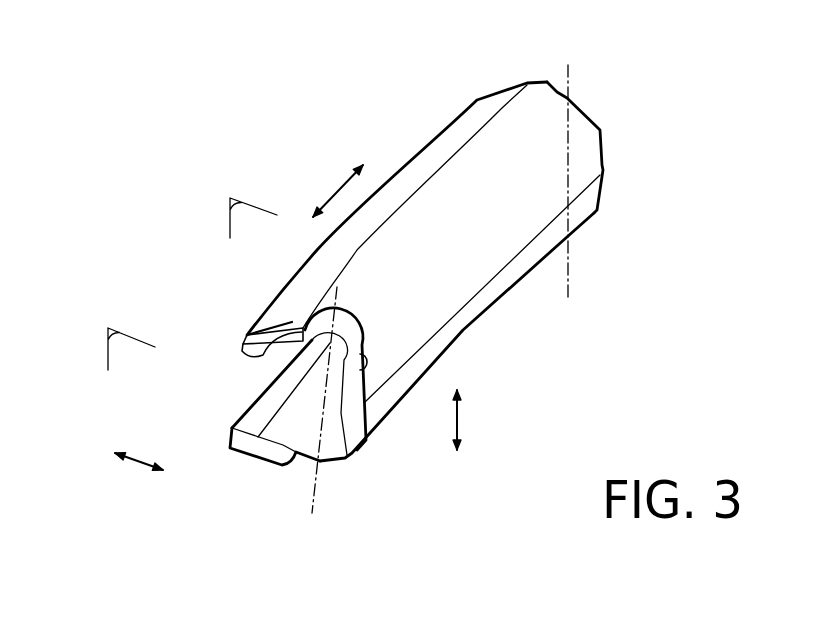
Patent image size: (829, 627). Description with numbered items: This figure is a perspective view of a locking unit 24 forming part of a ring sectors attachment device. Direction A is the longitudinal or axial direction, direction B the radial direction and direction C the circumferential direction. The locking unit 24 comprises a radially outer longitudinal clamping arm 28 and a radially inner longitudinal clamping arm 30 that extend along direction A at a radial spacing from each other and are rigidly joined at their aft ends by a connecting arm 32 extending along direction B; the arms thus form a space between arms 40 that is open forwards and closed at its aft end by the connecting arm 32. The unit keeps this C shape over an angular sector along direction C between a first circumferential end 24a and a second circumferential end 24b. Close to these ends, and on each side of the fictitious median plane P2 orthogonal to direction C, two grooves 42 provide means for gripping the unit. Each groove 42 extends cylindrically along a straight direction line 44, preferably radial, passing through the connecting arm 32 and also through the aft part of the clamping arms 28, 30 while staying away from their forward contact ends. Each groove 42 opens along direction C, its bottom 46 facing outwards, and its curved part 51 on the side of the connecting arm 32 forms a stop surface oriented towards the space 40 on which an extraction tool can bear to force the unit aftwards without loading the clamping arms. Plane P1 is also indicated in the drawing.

The locking unit 24 is at (442, 277).
The first circumferential end 24a is at (353, 477).
The second circumferential end 24b is at (602, 113).
The radially outer longitudinal clamping arm 28 is at (275, 300).
The radially inner longitudinal clamping arm 30 is at (247, 440).
The connecting arm 32 is at (452, 333).
The space between arms 40 is at (270, 362).
The groove 42 is at (340, 325).
The straight direction line 44 is at (568, 283).
The bottom of the groove 46 is at (267, 323).
The stop surface 51 is at (370, 375).
The first plane P1 is at (112, 328).
The median plane P2 is at (238, 203).
The direction A is at (138, 457).
The direction B is at (458, 417).
The direction C is at (332, 190).